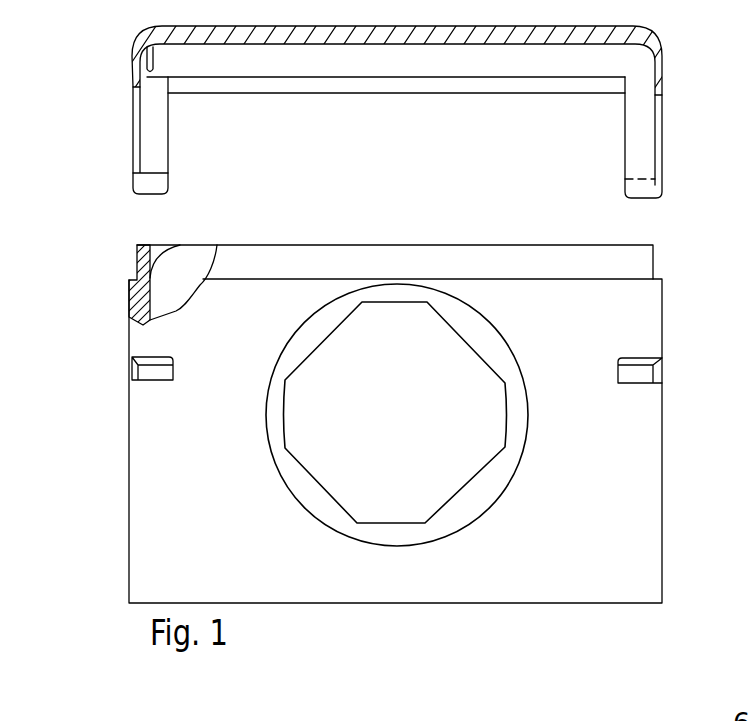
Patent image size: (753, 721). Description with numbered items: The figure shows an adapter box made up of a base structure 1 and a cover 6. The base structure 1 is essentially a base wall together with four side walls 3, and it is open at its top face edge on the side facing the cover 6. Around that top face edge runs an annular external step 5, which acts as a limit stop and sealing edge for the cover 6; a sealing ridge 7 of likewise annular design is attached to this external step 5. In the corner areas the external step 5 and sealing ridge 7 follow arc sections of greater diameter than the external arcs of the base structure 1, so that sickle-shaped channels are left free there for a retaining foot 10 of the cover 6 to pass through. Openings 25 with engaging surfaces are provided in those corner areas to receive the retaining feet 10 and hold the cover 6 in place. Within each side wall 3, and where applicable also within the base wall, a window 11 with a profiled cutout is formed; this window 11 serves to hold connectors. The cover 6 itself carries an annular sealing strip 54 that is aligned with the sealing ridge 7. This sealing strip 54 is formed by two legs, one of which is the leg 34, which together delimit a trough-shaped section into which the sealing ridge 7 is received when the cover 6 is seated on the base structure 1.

The base structure 1 is at (460, 603).
The side wall 3 is at (583, 567).
The external step 5 is at (129, 280).
The cover 6 is at (376, 88).
The sealing ridge 7 is at (169, 245).
The retaining foot 10 is at (148, 151).
The window 11 is at (476, 460).
The opening 25 is at (148, 372).
The leg 34 is at (153, 63).
The sealing strip 54 is at (124, 57).